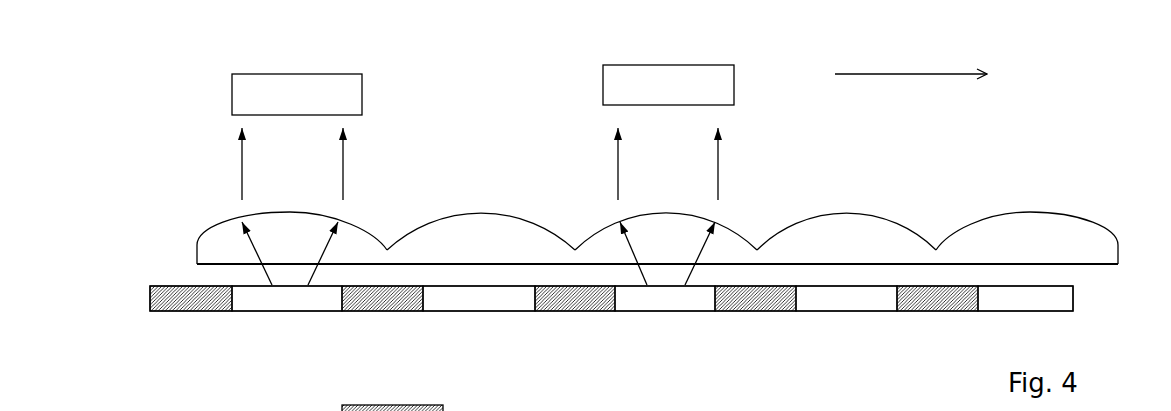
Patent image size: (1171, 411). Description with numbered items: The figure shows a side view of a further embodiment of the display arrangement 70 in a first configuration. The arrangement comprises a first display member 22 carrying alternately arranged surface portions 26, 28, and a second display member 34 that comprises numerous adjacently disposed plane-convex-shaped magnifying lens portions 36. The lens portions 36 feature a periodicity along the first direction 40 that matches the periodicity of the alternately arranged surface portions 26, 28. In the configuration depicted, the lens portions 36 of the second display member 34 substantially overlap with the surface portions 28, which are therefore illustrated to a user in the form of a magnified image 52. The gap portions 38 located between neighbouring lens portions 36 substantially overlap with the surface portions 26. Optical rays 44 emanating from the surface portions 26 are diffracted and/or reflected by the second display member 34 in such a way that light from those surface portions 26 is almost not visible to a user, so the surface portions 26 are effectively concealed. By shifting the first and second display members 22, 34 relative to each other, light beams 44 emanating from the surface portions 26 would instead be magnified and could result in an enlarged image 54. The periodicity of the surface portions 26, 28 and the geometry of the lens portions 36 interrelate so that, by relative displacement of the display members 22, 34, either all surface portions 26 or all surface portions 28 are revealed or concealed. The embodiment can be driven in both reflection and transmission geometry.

The first display member 22 is at (572, 333).
The surface portions 26 is at (187, 311).
The surface portions 28 is at (280, 301).
The second display member 34 is at (622, 207).
The lens portions 36 is at (284, 212).
The gap portions 38 is at (571, 212).
The first direction 40 is at (869, 74).
The optical rays 44 is at (242, 167).
The magnified image 52 is at (274, 78).
The enlarged image 54 is at (406, 405).
The display arrangement 70 is at (162, 102).